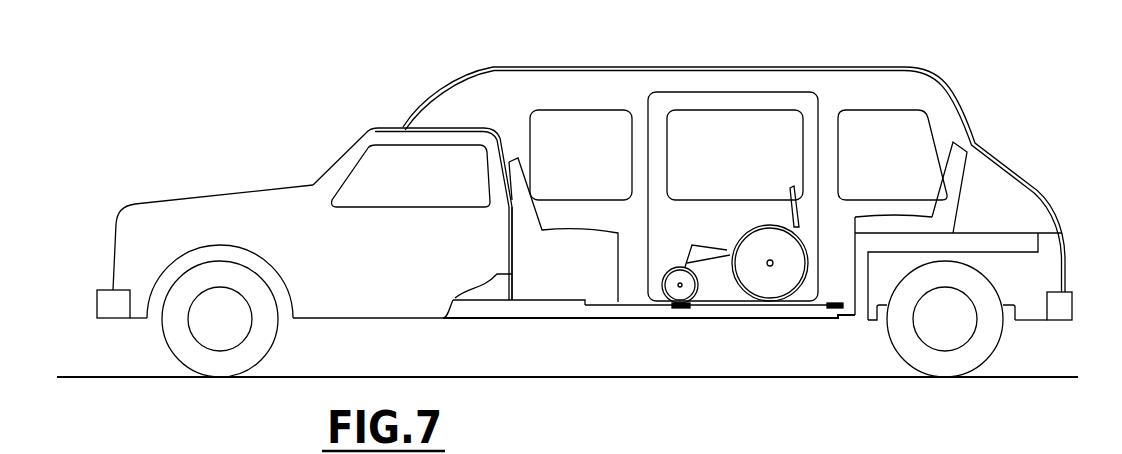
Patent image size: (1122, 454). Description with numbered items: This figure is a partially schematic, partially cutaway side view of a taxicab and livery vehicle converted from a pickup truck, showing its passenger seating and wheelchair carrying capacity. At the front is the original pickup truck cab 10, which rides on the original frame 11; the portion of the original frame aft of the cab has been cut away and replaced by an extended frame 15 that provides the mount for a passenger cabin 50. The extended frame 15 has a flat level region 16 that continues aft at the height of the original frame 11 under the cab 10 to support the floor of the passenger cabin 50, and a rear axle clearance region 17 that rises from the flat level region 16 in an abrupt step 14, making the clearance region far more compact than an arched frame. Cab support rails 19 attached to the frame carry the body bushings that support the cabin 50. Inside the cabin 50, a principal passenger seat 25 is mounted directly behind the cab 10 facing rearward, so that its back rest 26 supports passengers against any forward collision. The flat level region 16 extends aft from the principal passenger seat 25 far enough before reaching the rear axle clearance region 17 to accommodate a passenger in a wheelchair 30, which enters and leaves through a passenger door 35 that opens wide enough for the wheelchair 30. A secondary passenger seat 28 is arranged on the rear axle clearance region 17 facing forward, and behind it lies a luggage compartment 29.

The pickup truck cab 10 is at (280, 188).
The original frame 11 is at (500, 313).
The abrupt step 14 is at (860, 277).
The extended frame 15 is at (768, 310).
The flat level region 16 is at (728, 305).
The rear axle clearance region 17 is at (982, 243).
The cab support rails 19 is at (683, 308).
The principal passenger seat 25 is at (592, 276).
The back rest 26 is at (520, 213).
The secondary passenger seat 28 is at (952, 177).
The luggage compartment 29 is at (1017, 205).
The wheelchair 30 is at (765, 243).
The passenger door 35 is at (670, 102).
The passenger cabin 50 is at (818, 65).